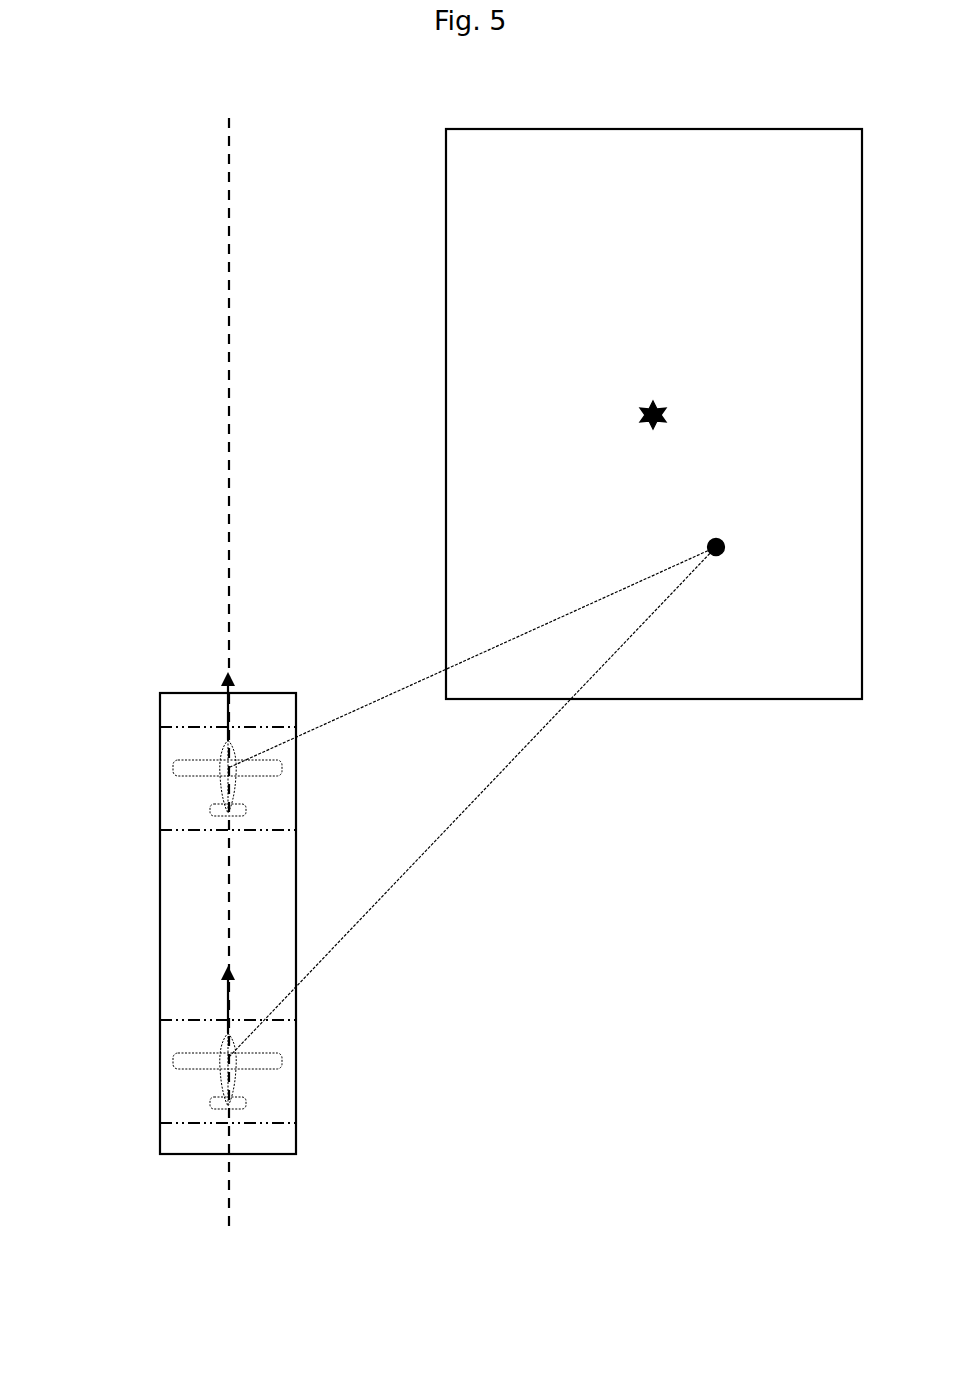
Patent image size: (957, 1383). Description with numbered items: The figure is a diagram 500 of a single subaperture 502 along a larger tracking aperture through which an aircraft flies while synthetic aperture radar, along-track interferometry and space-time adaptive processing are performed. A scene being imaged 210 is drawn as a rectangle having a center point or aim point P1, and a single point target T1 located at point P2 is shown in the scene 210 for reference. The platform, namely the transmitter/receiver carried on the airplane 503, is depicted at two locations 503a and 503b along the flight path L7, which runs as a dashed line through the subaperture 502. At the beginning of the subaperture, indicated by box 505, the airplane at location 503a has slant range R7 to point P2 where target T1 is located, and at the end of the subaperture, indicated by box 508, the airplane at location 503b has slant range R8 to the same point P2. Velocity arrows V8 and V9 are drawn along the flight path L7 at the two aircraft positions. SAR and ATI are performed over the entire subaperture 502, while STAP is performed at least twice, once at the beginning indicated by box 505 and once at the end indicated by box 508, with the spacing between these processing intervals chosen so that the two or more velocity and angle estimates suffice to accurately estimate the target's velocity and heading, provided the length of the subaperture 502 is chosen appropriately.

The diagram 500 is at (136, 193).
The scene being imaged 210 is at (440, 440).
The subaperture 502 is at (155, 890).
The airplane 503 is at (242, 936).
The first location of the airplane 503a is at (230, 1061).
The second location of the airplane 503b is at (230, 768).
The beginning of the subaperture 505 is at (198, 1130).
The end of the subaperture 508 is at (200, 722).
The flight path L7 is at (220, 438).
The center point (aim point) P1 is at (668, 418).
The point P2 is at (730, 550).
The point target T1 is at (714, 554).
The slant range R7 is at (410, 875).
The slant range R8 is at (340, 722).
The velocity vector at first position V8 is at (222, 990).
The velocity vector at second position V9 is at (230, 707).